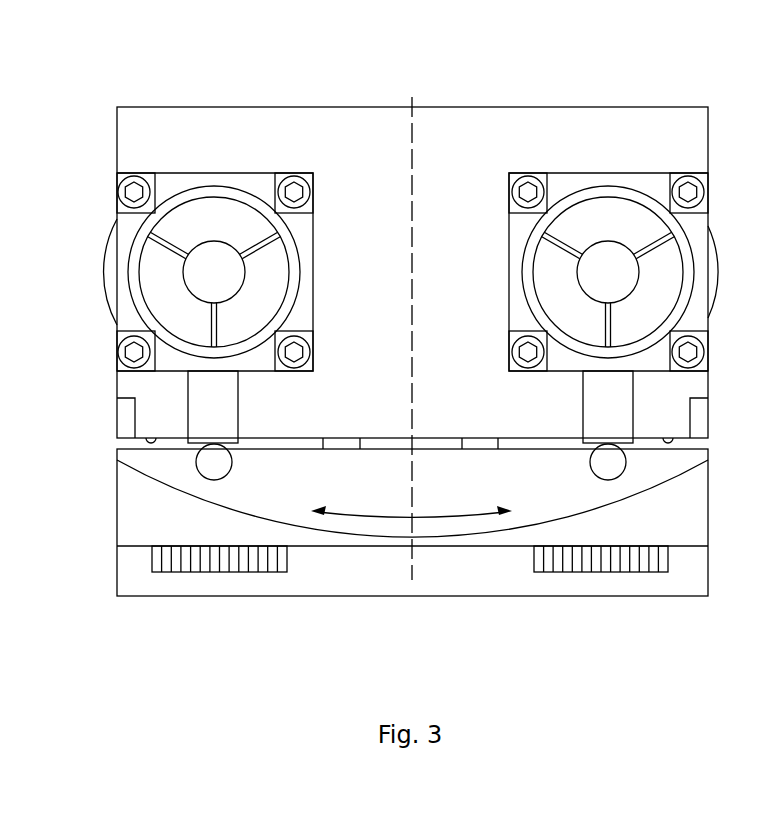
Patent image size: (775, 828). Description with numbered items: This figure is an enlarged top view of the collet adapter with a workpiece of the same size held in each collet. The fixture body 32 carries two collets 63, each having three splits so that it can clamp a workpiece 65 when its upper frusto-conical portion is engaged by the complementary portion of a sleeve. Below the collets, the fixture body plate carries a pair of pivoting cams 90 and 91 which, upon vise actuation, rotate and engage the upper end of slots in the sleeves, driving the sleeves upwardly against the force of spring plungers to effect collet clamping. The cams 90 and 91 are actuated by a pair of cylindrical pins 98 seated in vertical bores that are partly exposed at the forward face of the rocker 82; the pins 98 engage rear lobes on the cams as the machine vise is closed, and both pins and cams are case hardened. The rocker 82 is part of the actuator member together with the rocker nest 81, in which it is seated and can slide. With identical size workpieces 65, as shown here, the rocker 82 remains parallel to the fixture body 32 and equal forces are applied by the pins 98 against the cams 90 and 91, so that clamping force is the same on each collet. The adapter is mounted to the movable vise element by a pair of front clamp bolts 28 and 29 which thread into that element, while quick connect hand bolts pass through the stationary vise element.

The fixture body 32 is at (477, 100).
The 5C collet 63 is at (228, 212).
The workpiece 65 is at (230, 274).
The pivoting cam 90 is at (218, 402).
The pivoting cam 91 is at (605, 404).
The cylindrical pin 98 is at (232, 463).
The rocker nest 81 is at (690, 511).
The rocker 82 is at (527, 498).
The front clamp bolt 28 is at (222, 558).
The front clamp bolt 29 is at (621, 565).